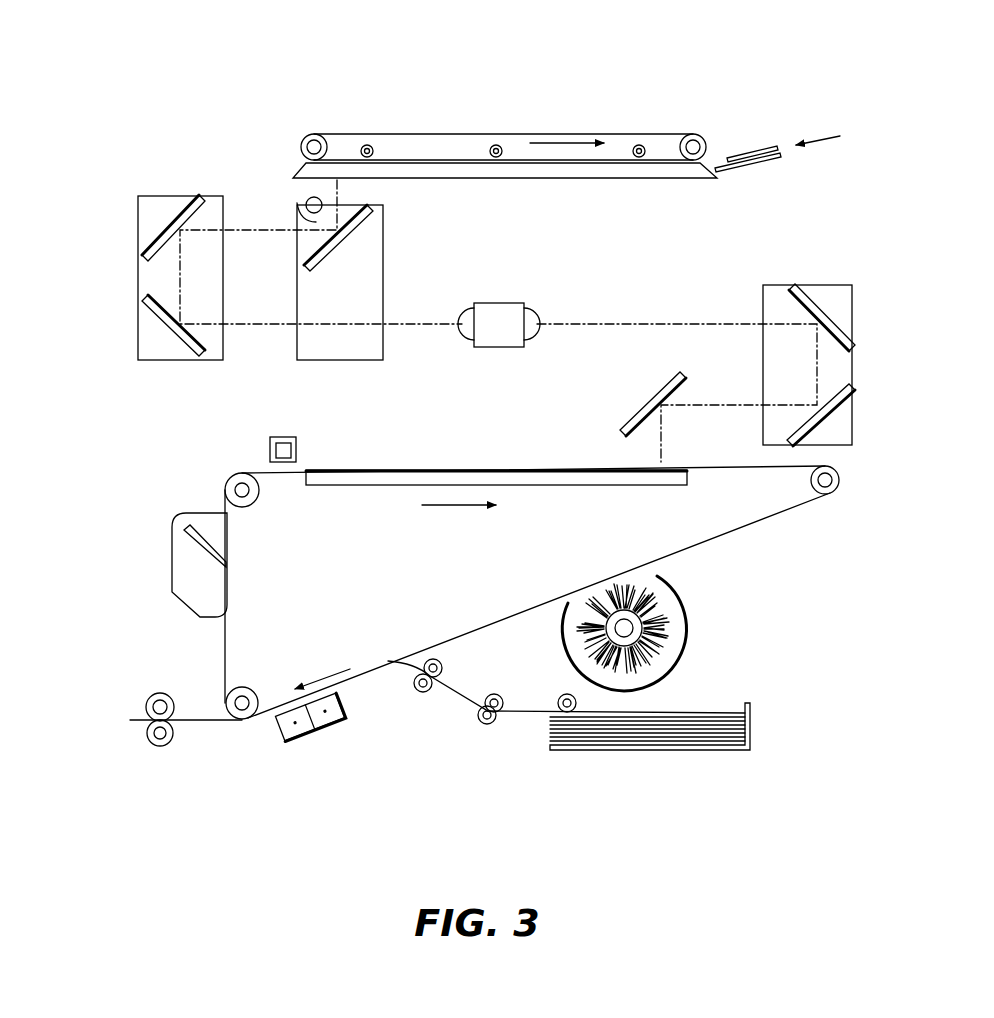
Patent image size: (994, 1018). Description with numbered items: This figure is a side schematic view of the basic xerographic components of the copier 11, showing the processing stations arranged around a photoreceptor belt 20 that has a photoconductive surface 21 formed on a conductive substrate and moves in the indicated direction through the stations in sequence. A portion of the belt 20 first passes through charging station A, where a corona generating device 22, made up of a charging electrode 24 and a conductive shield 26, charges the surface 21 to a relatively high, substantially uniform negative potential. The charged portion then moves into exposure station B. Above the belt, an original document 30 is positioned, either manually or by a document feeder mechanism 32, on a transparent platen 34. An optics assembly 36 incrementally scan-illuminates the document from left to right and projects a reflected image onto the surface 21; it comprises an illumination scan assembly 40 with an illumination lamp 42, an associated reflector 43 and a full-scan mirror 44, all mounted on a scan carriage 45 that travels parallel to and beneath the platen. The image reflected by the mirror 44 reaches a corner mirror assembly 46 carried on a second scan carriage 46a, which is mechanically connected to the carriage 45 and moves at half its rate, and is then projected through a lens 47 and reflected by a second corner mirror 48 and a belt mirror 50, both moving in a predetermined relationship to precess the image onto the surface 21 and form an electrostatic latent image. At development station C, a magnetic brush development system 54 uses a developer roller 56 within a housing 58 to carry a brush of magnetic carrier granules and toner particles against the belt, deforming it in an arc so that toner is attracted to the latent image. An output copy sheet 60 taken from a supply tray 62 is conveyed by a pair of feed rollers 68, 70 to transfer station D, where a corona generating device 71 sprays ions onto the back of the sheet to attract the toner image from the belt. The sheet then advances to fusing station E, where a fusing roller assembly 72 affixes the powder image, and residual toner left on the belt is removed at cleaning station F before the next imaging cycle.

The printing apparatus 11 is at (766, 541).
The photoreceptor belt 20 is at (717, 470).
The photoconductive surface 21 is at (705, 546).
The corona generating device 22 is at (316, 431).
The charging electrode 24 is at (280, 452).
The conductive shield 26 is at (282, 437).
The original document 30 is at (522, 160).
The document feeder mechanism 32 is at (575, 112).
The transparent platen 34 is at (610, 170).
The optics assembly 36 is at (512, 362).
The illumination scan assembly 40 is at (410, 270).
The illumination lamp 42 is at (307, 200).
The reflector 43 is at (300, 230).
The full-scan mirror 44 is at (347, 240).
The scan carriage 45 is at (385, 358).
The corner mirror assembly 46 is at (158, 180).
The second scan carriage 46a is at (148, 345).
The lens 47 is at (500, 308).
The second corner mirror 48 is at (855, 444).
The belt mirror 50 is at (645, 405).
The magnetic brush development system 54 is at (630, 542).
The developer roller 56 is at (598, 612).
The housing 58 is at (688, 636).
The output copy sheet 60 is at (457, 693).
The supply tray 62 is at (672, 751).
The feed roller 68 is at (498, 723).
The feed roller 70 is at (410, 667).
The corona generating device 71 is at (318, 735).
The fusing roller assembly 72 is at (176, 672).
The charging station A is at (251, 447).
The exposure station B is at (787, 262).
The development station C is at (644, 534).
The transfer station D is at (262, 738).
The fusing station E is at (151, 761).
The cleaning station F is at (163, 550).